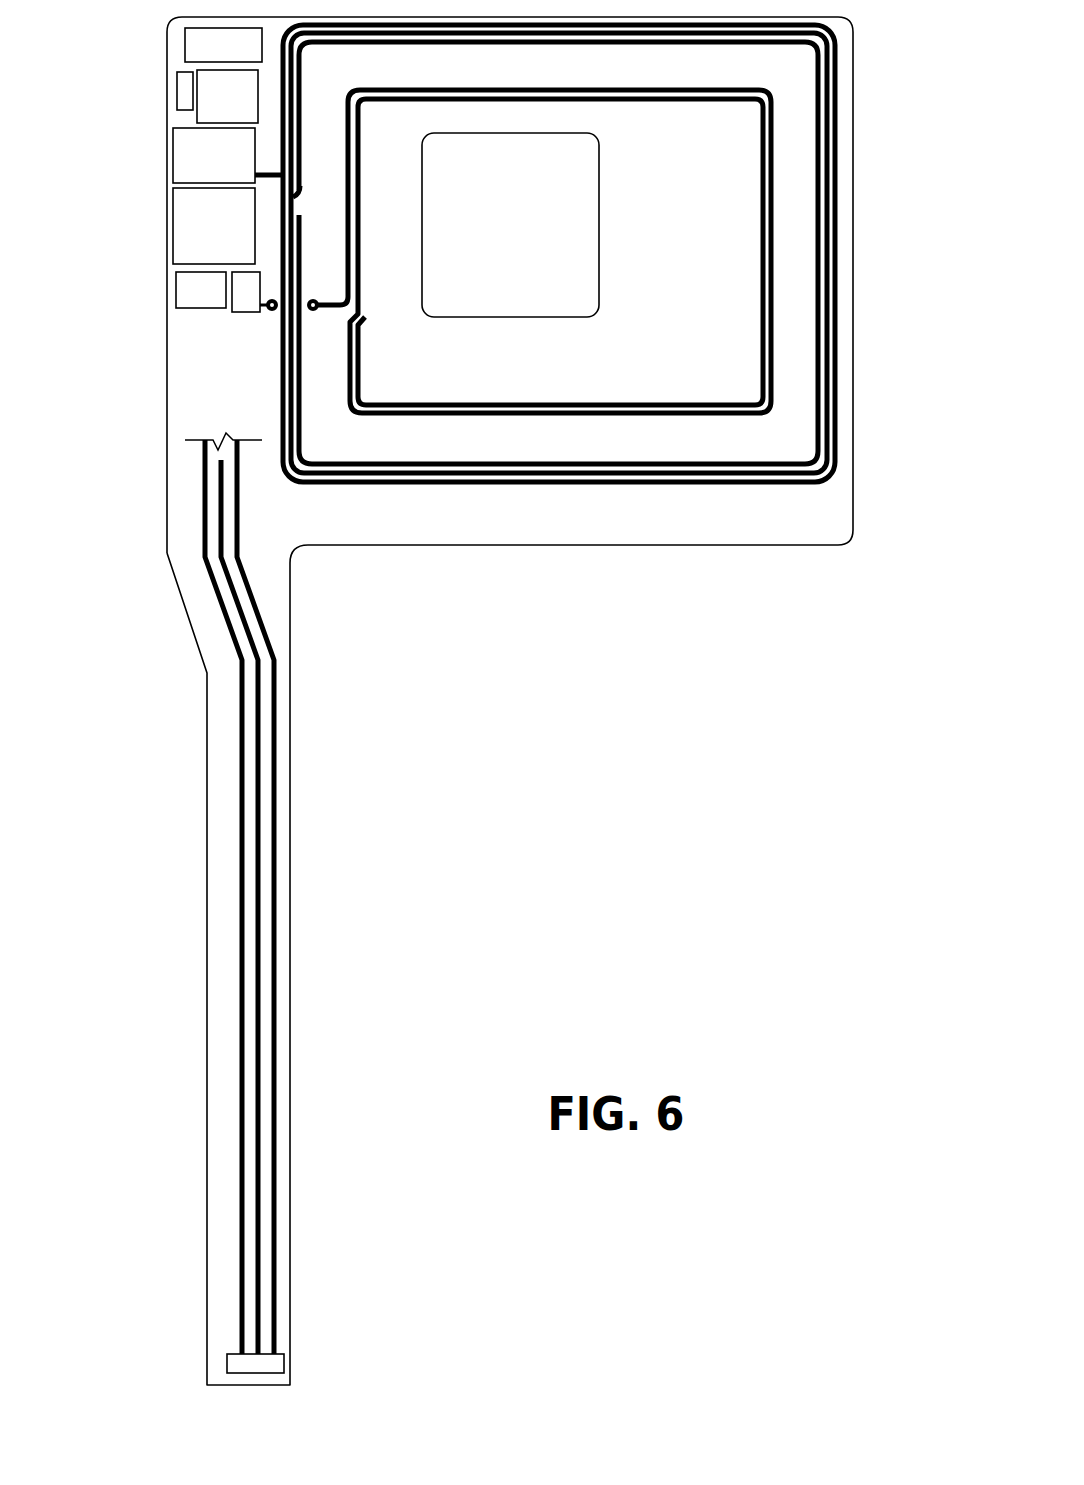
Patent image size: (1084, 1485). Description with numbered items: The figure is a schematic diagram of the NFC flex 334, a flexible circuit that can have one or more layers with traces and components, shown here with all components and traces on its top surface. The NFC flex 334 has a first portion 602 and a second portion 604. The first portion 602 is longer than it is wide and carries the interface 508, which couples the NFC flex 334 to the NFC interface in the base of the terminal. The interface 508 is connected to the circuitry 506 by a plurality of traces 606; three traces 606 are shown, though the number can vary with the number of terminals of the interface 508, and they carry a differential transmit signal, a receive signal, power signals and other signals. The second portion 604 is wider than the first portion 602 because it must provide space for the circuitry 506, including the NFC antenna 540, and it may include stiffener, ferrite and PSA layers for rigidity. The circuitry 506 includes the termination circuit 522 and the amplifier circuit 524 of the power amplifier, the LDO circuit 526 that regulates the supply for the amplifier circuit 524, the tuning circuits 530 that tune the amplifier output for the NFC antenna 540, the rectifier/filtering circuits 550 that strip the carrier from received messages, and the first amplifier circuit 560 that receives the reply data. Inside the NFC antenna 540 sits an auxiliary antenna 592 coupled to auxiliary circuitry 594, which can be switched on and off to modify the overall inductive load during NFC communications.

The circuitry 506 is at (122, 305).
The interface 508 is at (284, 1362).
The termination circuit 522 is at (176, 92).
The amplifier circuit 524 is at (227, 96).
The LDO circuit 526 is at (223, 45).
The tuning circuits 530 is at (214, 155).
The rectifier/filtering circuits 550 is at (214, 226).
The first amplifier circuit 560 is at (201, 290).
The auxiliary circuitry 594 is at (246, 312).
The NFC antenna 540 is at (838, 123).
The auxiliary antenna 592 is at (588, 398).
The second portion 604 is at (853, 440).
The NFC flex 334 is at (680, 545).
The traces 606 is at (277, 705).
The first portion 602 is at (290, 833).